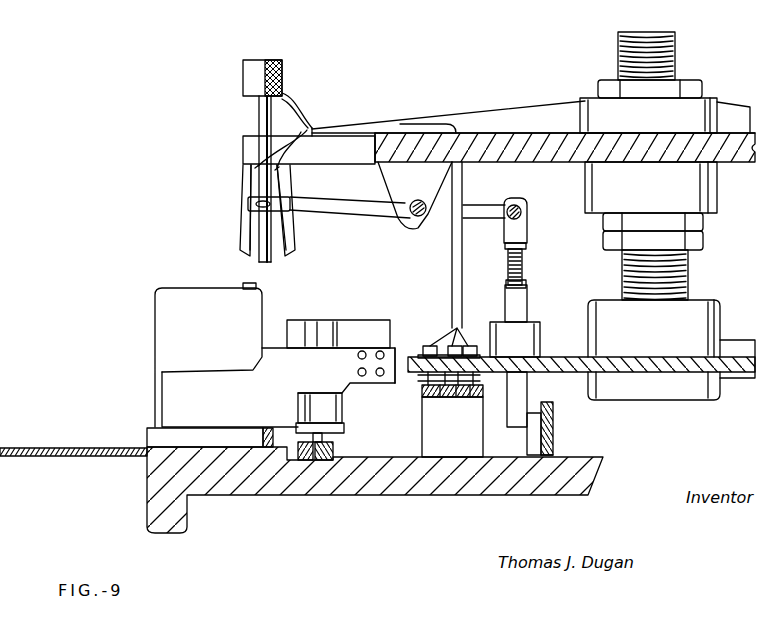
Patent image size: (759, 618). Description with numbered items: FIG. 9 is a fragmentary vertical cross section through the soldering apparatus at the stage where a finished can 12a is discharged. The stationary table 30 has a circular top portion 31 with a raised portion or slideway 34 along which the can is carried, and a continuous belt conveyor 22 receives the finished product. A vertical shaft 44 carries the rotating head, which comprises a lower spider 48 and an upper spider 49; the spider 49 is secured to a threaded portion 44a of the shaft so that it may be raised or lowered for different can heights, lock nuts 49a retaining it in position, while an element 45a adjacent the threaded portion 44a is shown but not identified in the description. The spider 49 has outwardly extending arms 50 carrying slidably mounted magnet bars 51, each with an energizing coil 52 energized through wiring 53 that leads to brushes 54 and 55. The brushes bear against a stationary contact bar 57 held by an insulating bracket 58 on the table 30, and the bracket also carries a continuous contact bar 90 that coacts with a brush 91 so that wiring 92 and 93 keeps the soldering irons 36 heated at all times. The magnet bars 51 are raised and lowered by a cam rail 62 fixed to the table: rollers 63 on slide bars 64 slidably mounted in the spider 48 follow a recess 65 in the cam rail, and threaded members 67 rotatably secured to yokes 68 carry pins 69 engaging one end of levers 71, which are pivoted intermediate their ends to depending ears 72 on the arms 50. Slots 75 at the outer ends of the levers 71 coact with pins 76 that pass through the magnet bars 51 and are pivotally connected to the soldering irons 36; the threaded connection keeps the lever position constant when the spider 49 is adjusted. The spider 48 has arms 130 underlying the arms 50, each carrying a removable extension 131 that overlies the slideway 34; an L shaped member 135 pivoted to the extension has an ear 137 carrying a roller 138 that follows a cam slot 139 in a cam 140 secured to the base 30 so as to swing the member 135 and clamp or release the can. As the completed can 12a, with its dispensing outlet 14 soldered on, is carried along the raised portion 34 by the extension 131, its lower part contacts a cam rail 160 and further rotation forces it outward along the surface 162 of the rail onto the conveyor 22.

The finished can 12a is at (208, 357).
The dispensing outlet 14 is at (258, 285).
The continuous belt conveyor 22 is at (95, 446).
The table 30 is at (277, 462).
The circular shaped top portion 31 is at (394, 468).
The raised portion 34 is at (223, 449).
The soldering iron 36 is at (245, 222).
The vertical shaft 44 is at (690, 279).
The threaded portion 44a is at (678, 56).
The nut 45a is at (700, 87).
The spider 48 is at (578, 332).
The spider 49 is at (480, 148).
The lock nuts 49a is at (705, 223).
The arm 50 is at (255, 151).
The magnet bar 51 is at (258, 121).
The energizing coil 52 is at (258, 77).
The wiring 53 is at (298, 123).
The brush 54 is at (455, 398).
The brush 55 is at (428, 390).
The contact bar 57 is at (440, 398).
The bracket 58 is at (462, 440).
The cam rail 62 is at (554, 437).
The roller 63 is at (533, 430).
The slide bar 64 is at (530, 391).
The recess 65 is at (554, 414).
The threaded member 67 is at (524, 263).
The yoke 68 is at (529, 231).
The pin 69 is at (521, 208).
The lever 71 is at (366, 190).
The depending ear 72 is at (415, 195).
The slot 75 is at (248, 205).
The pin 76 is at (285, 201).
The continuous contact bar 90 is at (471, 398).
The brush 91 is at (480, 380).
The wiring 92 is at (445, 330).
The wiring 93 is at (296, 151).
The arm 130 is at (405, 347).
The extension 131 is at (278, 387).
The L shaped member 135 is at (359, 333).
The ear 137 is at (344, 429).
The roller 138 is at (323, 439).
The cam slot 139 is at (323, 462).
The cam 140 is at (303, 462).
The cam rail 160 is at (273, 438).
The surface 162 is at (263, 438).